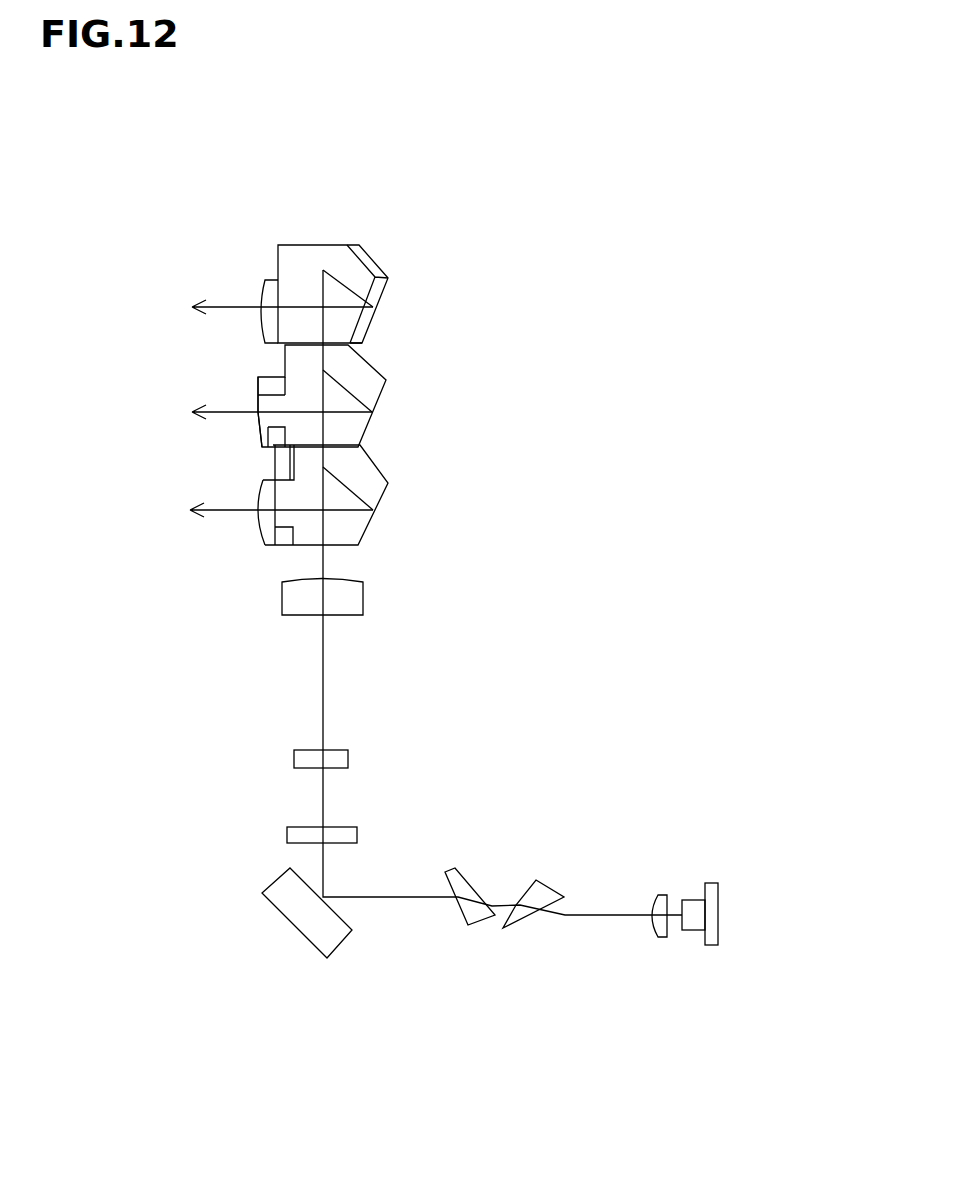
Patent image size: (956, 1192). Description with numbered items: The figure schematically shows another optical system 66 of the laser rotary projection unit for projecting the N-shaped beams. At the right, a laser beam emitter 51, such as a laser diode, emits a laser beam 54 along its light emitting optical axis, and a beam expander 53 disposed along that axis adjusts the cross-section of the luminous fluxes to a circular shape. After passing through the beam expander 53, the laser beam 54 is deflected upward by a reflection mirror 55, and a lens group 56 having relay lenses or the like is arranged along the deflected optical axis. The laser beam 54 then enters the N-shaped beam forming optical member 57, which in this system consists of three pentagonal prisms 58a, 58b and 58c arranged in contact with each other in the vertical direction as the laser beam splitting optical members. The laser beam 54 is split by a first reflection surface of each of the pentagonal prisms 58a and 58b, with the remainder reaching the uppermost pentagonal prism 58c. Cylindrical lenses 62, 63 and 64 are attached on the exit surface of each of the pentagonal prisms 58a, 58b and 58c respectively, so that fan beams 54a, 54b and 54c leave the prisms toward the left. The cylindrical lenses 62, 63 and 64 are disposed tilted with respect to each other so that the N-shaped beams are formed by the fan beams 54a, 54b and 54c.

The laser beam emitter 51 is at (695, 900).
The beam expander 53 is at (497, 860).
The laser beam 54 is at (582, 917).
The fan beam 54a is at (225, 513).
The fan beam 54b is at (220, 413).
The fan beam 54c is at (233, 306).
The reflection mirror 55 is at (298, 935).
The lens group 56 is at (376, 838).
The N-shaped beam forming optical member 57 is at (412, 355).
The pentagonal prism 58a is at (380, 528).
The pentagonal prism 58b is at (382, 392).
The pentagonal prism 58c is at (383, 297).
The cylindrical lens 62 is at (260, 492).
The cylindrical lens 63 is at (258, 376).
The cylindrical lens 64 is at (273, 278).
The another optical system 66 is at (648, 460).